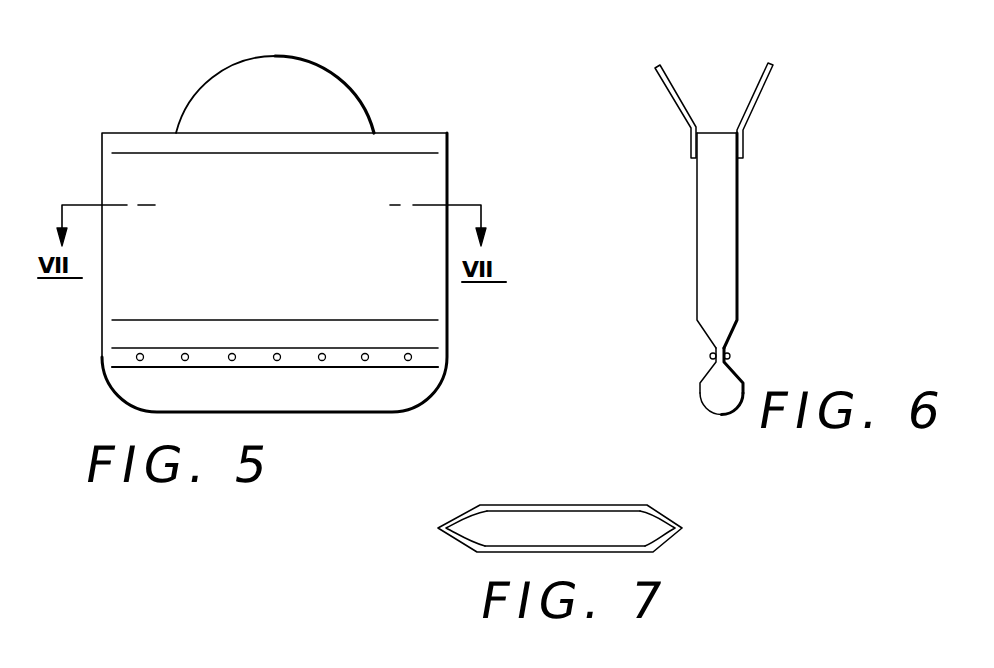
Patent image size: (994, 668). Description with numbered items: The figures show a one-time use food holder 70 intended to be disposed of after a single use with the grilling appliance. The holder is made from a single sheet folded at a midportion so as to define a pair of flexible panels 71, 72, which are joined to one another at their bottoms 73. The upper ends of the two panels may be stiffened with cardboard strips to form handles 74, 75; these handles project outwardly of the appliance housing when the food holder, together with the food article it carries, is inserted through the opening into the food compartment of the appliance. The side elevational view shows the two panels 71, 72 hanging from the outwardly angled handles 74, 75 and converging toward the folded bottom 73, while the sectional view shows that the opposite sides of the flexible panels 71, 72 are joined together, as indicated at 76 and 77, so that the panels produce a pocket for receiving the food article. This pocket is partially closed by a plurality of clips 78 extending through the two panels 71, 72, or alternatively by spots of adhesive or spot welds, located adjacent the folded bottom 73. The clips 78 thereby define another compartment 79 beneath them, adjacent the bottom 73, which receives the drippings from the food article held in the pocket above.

In FIG. 5, the bag 70 is at (178, 103).
In FIG. 5, the flexible panel 71 is at (428, 292).
In FIG. 6, the flexible panel 71 is at (695, 225).
In FIG. 6, the flexible panel 72 is at (741, 225).
In FIG. 7, the flexible panel 72 is at (543, 505).
In FIG. 6, the bottom 73 is at (710, 415).
In FIG. 5, the handle 74 is at (348, 95).
In FIG. 6, the handle 74 is at (677, 105).
In FIG. 6, the handle 75 is at (768, 90).
In FIG. 7, the joined side 76 is at (440, 527).
In FIG. 7, the joined side 77 is at (681, 527).
In FIG. 5, the clip 78 is at (412, 357).
In FIG. 6, the clip 78 is at (729, 355).
In FIG. 6, the compartment 79 is at (707, 385).